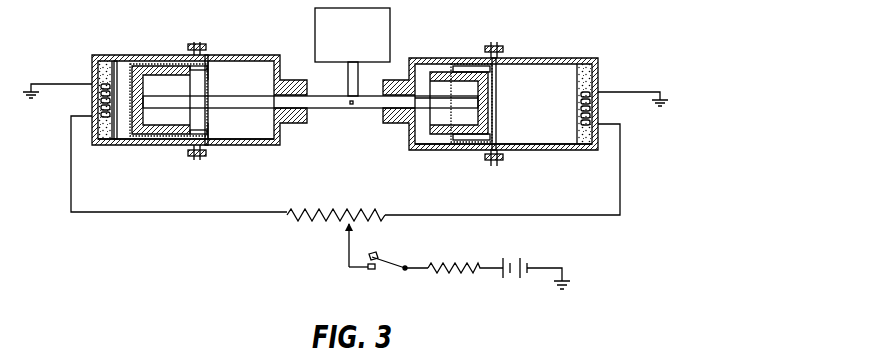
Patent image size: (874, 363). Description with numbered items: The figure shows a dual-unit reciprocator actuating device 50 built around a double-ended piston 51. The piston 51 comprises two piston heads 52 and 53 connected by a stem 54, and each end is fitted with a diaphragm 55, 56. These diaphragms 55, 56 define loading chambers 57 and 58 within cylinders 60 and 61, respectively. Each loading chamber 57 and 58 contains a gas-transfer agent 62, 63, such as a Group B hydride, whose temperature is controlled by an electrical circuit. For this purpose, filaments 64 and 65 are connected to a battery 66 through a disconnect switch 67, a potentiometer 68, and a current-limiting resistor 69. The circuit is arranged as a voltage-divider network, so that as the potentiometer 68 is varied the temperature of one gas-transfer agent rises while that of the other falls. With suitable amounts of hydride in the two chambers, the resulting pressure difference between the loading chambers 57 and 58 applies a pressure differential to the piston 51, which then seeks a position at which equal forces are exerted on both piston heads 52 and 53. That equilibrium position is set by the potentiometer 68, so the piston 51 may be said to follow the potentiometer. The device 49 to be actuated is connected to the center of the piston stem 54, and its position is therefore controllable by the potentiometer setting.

The device to be actuated 49 is at (392, 32).
The dual-unit reciprocator actuating device 50 is at (269, 53).
The double-ended piston 51 is at (322, 112).
The piston head 52 is at (140, 70).
The piston head 53 is at (482, 102).
The stem 54 is at (258, 105).
The diaphragm 55 is at (129, 64).
The diaphragm 56 is at (490, 79).
The loading chamber 57 is at (116, 60).
The loading chamber 58 is at (548, 60).
The cylinder 60 is at (240, 146).
The cylinder 61 is at (530, 150).
The gas-transfer agent 62 is at (98, 66).
The gas-transfer agent 63 is at (592, 76).
The filament 64 is at (100, 100).
The filament 65 is at (600, 108).
The battery 66 is at (530, 262).
The disconnect switch 67 is at (390, 258).
The potentiometer 68 is at (356, 206).
The current-limiting resistor 69 is at (445, 274).